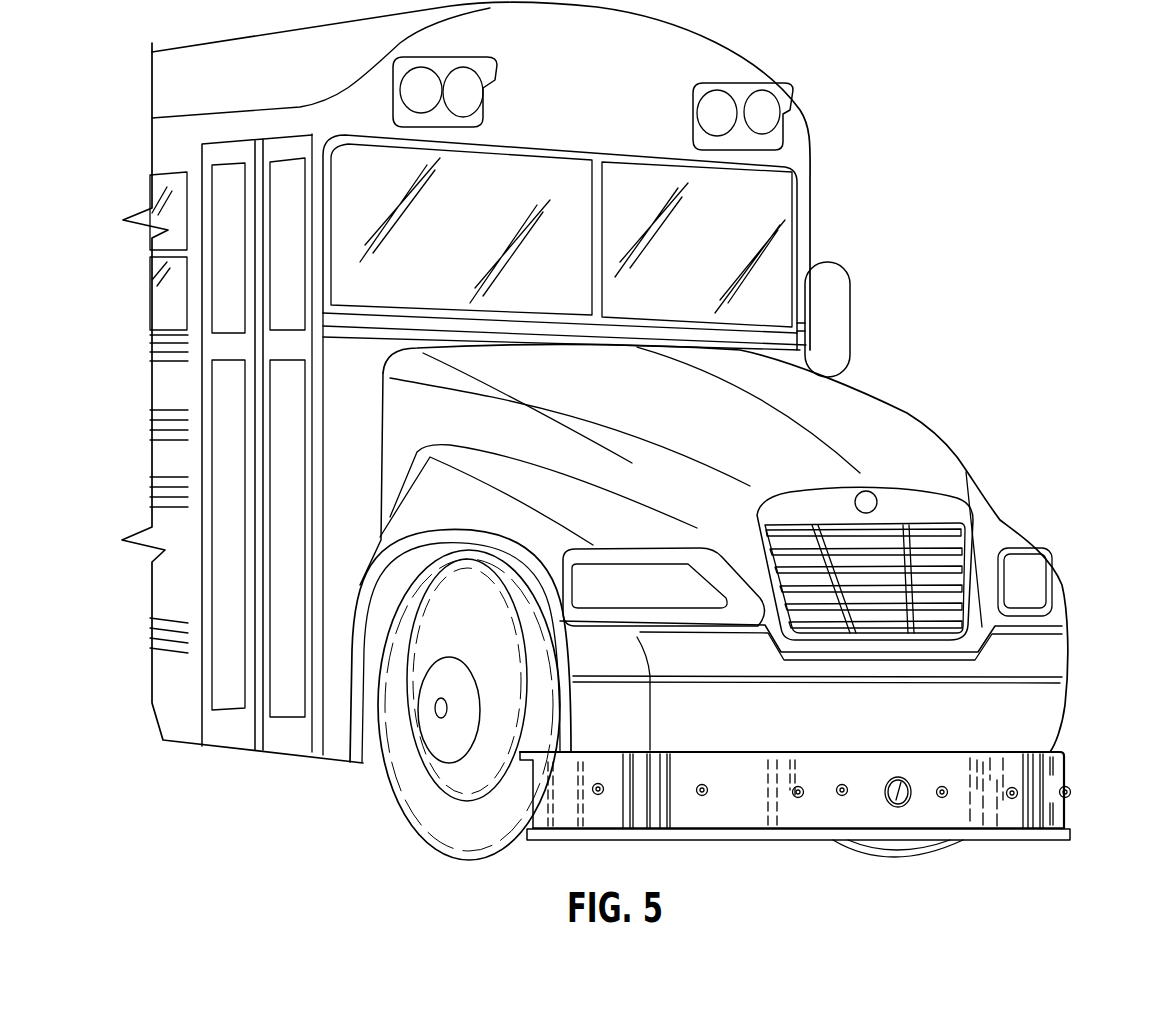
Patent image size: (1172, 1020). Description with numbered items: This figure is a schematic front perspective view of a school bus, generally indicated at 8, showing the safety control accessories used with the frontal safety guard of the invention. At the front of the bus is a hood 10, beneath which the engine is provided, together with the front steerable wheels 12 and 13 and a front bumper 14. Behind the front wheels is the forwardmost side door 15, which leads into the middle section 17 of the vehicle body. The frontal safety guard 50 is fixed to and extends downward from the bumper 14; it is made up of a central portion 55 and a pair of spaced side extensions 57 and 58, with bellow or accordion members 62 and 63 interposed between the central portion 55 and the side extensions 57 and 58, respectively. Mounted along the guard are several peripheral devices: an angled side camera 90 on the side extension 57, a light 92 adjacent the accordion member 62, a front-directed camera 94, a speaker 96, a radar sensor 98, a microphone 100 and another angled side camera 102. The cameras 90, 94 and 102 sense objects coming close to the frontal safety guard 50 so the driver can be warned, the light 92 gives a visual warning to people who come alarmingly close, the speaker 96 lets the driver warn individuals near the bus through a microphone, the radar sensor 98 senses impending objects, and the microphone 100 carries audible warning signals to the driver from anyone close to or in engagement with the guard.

The school bus 8 is at (932, 352).
The hood 10 is at (903, 417).
The front steerable wheel 12 is at (417, 780).
The front steerable wheel 13 is at (908, 848).
The front bumper 14 is at (1050, 708).
The forwardmost side door 15 is at (223, 700).
The middle section 17 is at (170, 590).
The frontal safety guard 50 is at (1070, 748).
The central portion 55 is at (798, 797).
The side extension 57 is at (567, 763).
The side extension 58 is at (1053, 818).
The bellow or accordion member 62 is at (657, 762).
The bellow or accordion member 63 is at (1033, 833).
The angled side camera 90 is at (600, 794).
The light 92 is at (702, 795).
The front-directed camera 94 is at (842, 797).
The speaker 96 is at (896, 807).
The radar sensor 98 is at (941, 798).
The microphone 100 is at (1012, 799).
The angled side camera 102 is at (1071, 792).